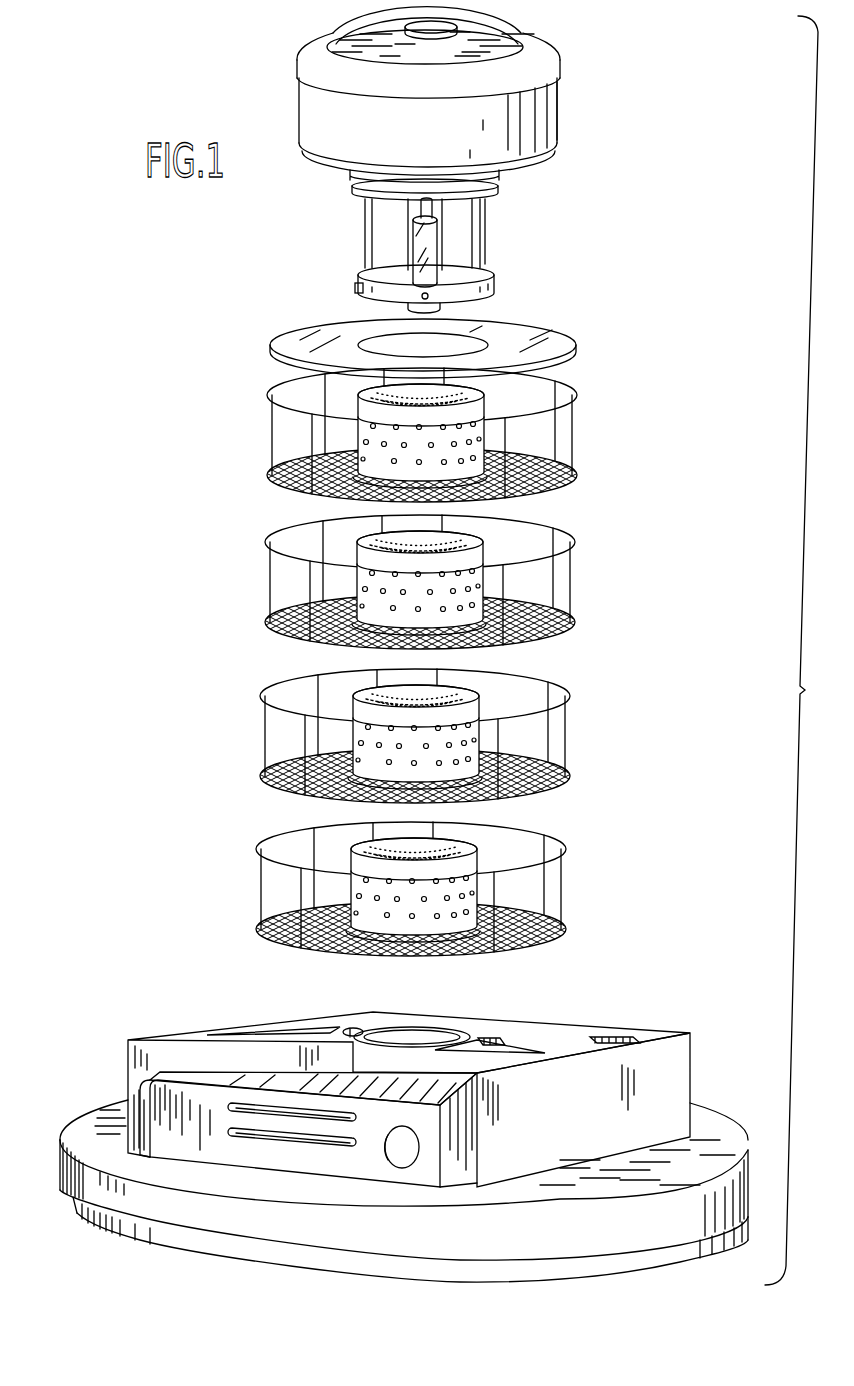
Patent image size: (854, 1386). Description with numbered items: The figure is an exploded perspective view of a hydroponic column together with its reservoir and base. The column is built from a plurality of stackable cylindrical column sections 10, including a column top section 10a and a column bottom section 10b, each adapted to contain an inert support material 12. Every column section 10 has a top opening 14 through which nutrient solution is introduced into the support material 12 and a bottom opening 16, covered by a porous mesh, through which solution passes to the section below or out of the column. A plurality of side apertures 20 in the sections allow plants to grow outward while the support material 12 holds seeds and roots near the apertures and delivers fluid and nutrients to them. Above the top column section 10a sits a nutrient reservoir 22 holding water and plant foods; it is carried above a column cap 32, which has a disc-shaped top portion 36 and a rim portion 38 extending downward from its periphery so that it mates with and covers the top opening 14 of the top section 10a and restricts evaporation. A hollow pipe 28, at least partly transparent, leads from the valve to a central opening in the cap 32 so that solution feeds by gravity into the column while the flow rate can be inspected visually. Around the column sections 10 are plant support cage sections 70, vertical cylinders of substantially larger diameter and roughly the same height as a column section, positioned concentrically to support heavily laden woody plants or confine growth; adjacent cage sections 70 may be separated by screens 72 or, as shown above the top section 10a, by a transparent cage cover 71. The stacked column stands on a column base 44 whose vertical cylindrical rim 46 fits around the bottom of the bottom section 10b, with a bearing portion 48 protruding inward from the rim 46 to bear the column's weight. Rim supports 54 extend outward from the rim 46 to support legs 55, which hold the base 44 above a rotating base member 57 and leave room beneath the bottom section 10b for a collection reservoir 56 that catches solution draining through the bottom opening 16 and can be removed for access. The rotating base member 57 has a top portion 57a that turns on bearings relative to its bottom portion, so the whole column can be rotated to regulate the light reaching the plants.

The nutrient reservoir 22 is at (533, 117).
The hollow pipe 28 is at (430, 242).
The disc-shaped top portion 36 is at (456, 278).
The column cap 32 is at (463, 300).
The rim portion 38 is at (378, 289).
The transparent cage cover 71 is at (548, 348).
The plant support cage section 70 is at (575, 456).
The top opening 14 is at (300, 398).
The screen 72 is at (552, 490).
The bottom opening 16 is at (458, 490).
The column top section 10a is at (470, 408).
The inert support material 12 is at (517, 536).
The stackable cylindrical column section 10 is at (470, 562).
The side aperture 20 is at (318, 636).
The column bottom section 10b is at (465, 870).
The rotating base member 57 is at (765, 1187).
The top portion of rotating base member 57a is at (722, 1165).
The column base 44 is at (433, 1086).
The support leg 55 is at (675, 1067).
The rim support 54 is at (560, 1033).
The vertical cylindrical rim 46 is at (440, 1032).
The bearing portion 48 is at (365, 1030).
The collection reservoir 56 is at (173, 1148).